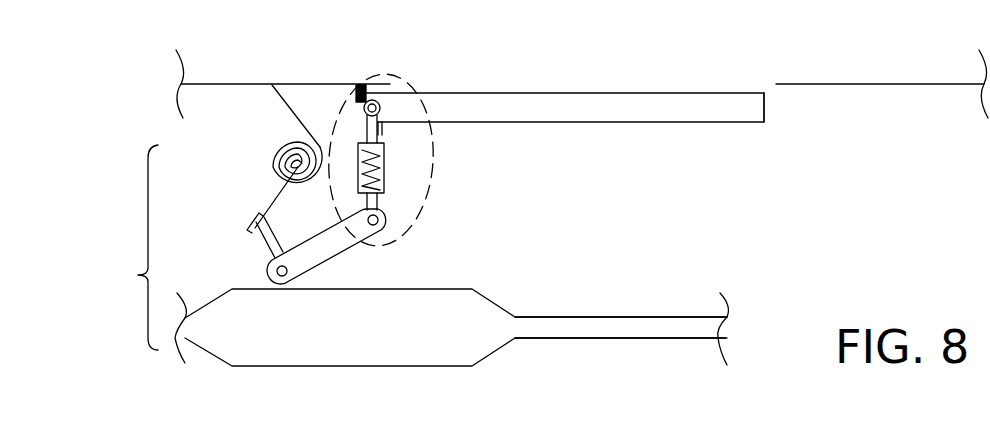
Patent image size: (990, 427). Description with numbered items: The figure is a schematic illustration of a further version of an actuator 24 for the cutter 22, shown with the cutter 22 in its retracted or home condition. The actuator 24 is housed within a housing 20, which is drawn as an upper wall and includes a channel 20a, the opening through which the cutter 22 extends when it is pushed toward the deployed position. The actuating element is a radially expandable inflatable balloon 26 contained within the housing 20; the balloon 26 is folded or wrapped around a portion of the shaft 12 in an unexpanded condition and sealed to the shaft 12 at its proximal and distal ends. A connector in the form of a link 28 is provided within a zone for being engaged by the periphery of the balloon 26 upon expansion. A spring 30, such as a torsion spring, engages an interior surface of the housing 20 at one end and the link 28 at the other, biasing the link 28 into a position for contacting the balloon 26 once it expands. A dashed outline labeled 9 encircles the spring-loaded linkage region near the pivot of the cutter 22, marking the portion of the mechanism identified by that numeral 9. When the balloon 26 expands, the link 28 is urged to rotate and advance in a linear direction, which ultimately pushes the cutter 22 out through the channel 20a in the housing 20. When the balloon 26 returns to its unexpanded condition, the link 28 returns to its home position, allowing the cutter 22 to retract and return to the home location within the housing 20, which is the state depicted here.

The housing 20 is at (228, 85).
The channel 20a is at (713, 69).
The cutter 22 is at (547, 92).
The spring damper assembly 9 is at (432, 183).
The link 28 is at (353, 255).
The spring 30 is at (263, 175).
The actuator 24 is at (128, 247).
The inflatable balloon 26 is at (490, 296).
The shaft 12 is at (605, 317).